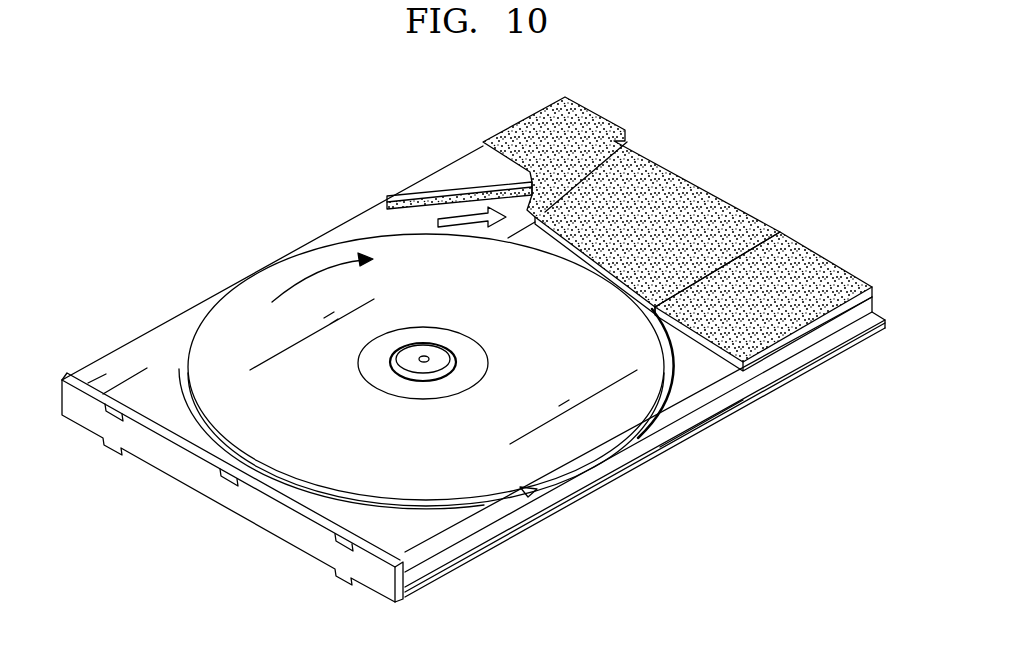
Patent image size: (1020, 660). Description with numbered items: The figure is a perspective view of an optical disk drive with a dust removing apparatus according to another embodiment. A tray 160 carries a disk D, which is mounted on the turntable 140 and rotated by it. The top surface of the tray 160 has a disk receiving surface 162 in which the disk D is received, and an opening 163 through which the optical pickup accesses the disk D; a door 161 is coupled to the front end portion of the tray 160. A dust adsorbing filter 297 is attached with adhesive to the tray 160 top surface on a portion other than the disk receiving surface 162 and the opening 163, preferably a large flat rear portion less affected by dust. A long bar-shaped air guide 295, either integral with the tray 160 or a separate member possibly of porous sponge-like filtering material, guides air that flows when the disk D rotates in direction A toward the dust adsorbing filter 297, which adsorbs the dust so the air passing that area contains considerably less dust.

The turntable 140 is at (426, 370).
The tray 160 is at (633, 457).
The door 161 is at (278, 519).
The disk receiving surface 162 is at (537, 490).
The opening 163 is at (630, 290).
The air guide 295 is at (438, 196).
The dust adsorbing filter 297 is at (817, 277).
The disk D is at (232, 323).